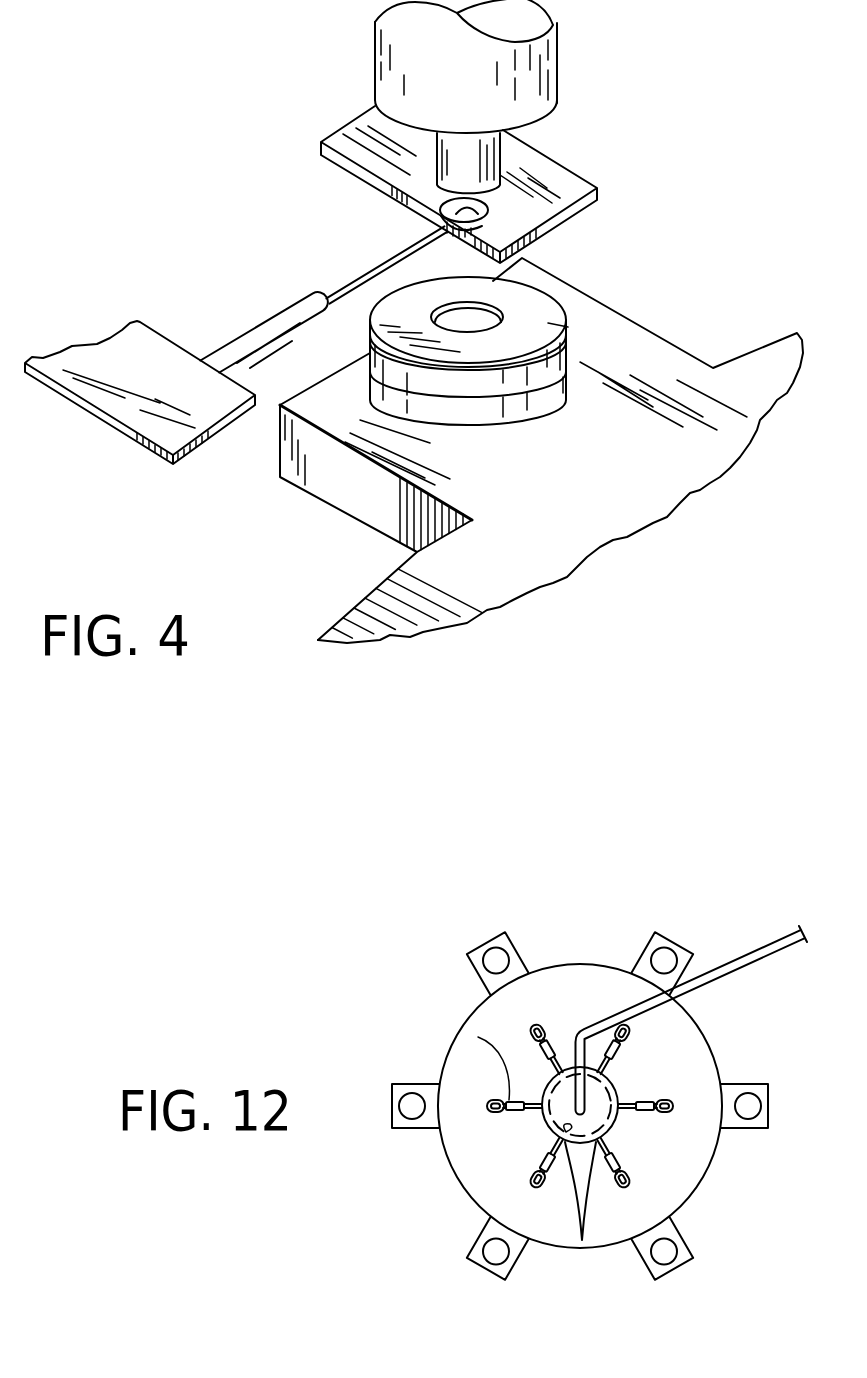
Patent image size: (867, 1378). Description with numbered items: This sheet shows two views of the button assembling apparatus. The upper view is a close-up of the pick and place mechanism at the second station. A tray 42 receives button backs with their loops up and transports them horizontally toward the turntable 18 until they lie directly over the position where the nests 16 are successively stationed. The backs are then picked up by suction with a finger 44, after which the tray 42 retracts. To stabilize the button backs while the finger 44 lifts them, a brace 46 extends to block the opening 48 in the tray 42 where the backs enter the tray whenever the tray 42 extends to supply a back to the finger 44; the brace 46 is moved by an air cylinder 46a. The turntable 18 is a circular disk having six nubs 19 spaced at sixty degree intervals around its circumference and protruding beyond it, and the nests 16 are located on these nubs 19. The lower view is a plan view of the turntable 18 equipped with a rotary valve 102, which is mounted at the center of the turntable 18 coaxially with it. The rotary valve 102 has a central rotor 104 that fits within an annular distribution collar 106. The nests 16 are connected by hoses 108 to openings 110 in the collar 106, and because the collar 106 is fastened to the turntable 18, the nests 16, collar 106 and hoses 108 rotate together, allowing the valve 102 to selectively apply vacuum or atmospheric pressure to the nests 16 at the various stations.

In FIG. 4, the nests 16 is at (567, 357).
In FIG. 12, the nests 16 is at (412, 1113).
In FIG. 4, the turntable 18 is at (597, 507).
In FIG. 12, the turntable 18 is at (563, 977).
In FIG. 4, the nubs 19 is at (318, 398).
In FIG. 4, the tray 42 is at (555, 185).
In FIG. 4, the finger 44 is at (500, 150).
In FIG. 4, the brace 46 is at (382, 262).
In FIG. 4, the air cylinder 46a is at (262, 323).
In FIG. 4, the opening 48 is at (463, 232).
In FIG. 12, the rotary valve 102 is at (627, 1133).
In FIG. 12, the central rotor 104 is at (597, 1090).
In FIG. 12, the annular distribution collar 106 is at (618, 1098).
In FIG. 12, the hoses 108 is at (537, 1052).
In FIG. 12, the openings 110 is at (582, 1240).